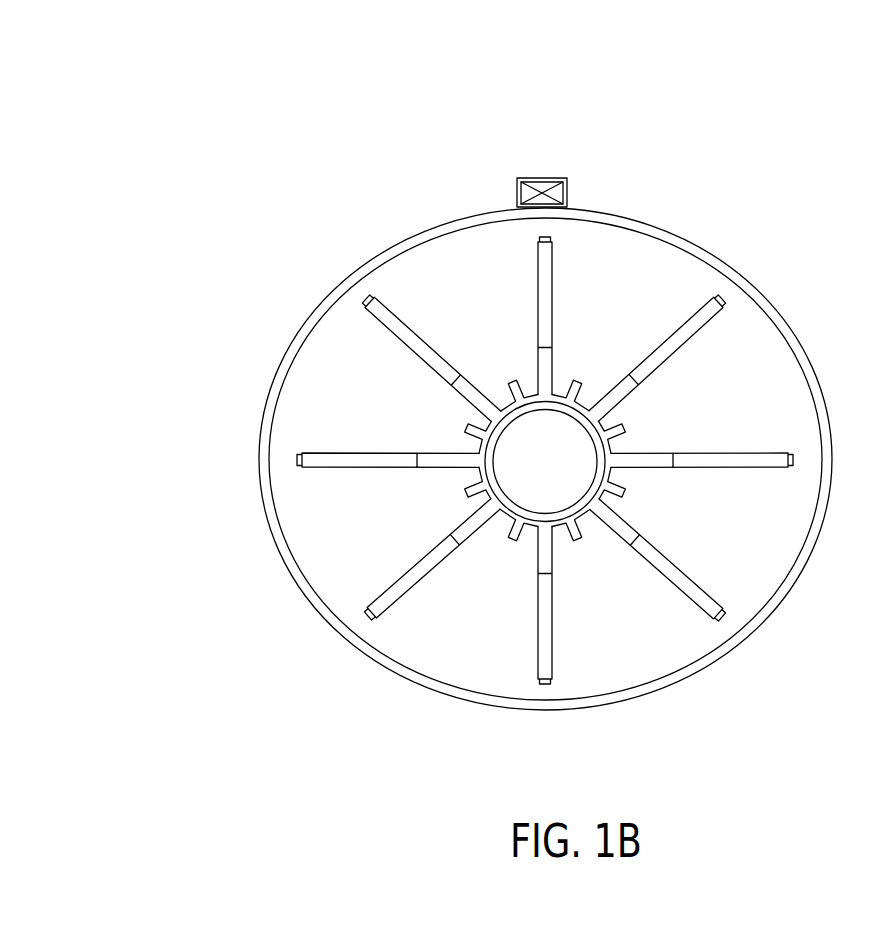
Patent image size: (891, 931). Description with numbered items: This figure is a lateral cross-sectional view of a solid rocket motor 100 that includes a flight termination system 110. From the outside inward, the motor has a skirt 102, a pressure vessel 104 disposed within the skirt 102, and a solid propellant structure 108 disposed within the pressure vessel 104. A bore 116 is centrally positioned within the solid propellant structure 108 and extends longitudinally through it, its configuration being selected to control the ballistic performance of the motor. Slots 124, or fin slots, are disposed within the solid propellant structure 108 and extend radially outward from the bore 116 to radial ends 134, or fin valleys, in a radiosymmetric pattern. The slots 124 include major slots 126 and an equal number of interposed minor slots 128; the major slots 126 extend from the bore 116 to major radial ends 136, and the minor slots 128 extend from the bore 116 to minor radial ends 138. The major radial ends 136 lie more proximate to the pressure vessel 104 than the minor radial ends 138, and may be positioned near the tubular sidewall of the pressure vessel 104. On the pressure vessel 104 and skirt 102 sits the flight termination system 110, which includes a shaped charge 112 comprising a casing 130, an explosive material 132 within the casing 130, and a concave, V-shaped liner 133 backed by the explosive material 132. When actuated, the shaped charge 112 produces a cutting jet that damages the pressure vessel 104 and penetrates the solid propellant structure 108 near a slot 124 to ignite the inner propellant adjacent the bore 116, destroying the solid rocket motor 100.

The solid rocket motor 100 is at (141, 88).
The skirt 102 is at (300, 327).
The pressure vessel 104 is at (678, 240).
The solid propellant structure 108 is at (763, 382).
The flight termination system 110 is at (502, 157).
The shaped charge 112 is at (637, 67).
The bore 116 is at (570, 483).
The slots 124 is at (192, 512).
The major slots 126 is at (372, 460).
The minor slots 128 is at (472, 487).
The casing 130 is at (528, 180).
The explosive material 132 is at (547, 185).
The liner 133 is at (557, 183).
The radial ends 134 is at (756, 690).
The major radial ends 136 is at (550, 682).
The minor radial ends 138 is at (578, 530).